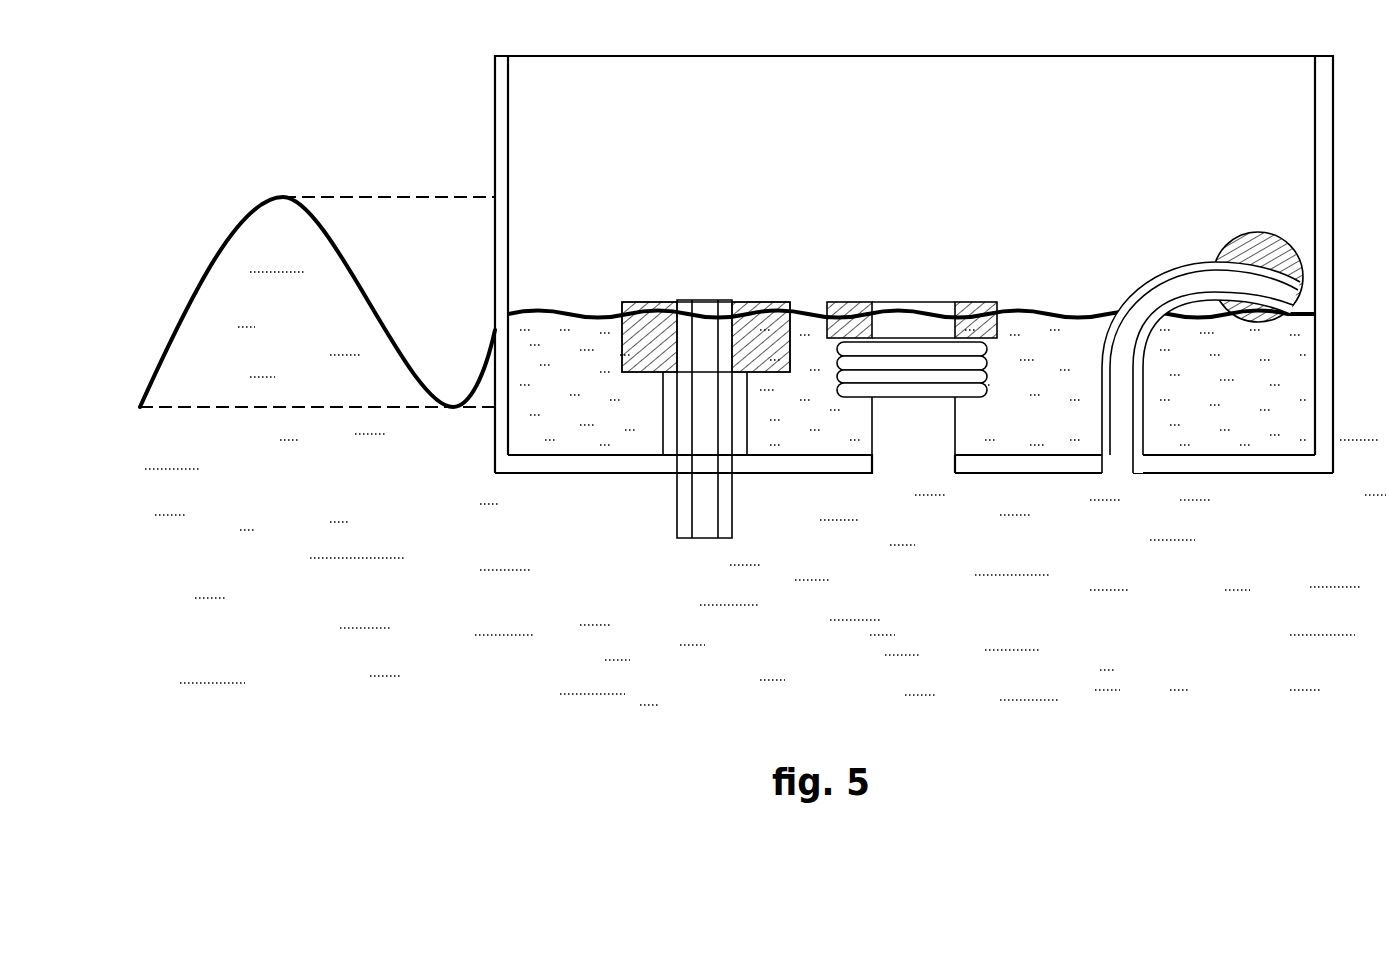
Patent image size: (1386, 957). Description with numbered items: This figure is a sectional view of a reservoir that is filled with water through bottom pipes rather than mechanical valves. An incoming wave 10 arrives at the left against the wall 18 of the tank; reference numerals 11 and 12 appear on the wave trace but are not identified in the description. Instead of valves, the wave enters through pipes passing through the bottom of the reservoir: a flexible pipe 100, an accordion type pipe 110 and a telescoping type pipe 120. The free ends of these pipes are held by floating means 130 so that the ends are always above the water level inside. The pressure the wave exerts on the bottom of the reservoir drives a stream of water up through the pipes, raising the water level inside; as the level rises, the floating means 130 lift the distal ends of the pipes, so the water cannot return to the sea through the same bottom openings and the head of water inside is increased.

The wall 18 is at (495, 108).
The incoming wave 10 is at (378, 304).
The wave crest level 11 is at (282, 195).
The wave trough level 12 is at (460, 410).
The floating means 130 is at (1237, 234).
The flexible pipe 100 is at (1155, 280).
The telescoping type pipe 120 is at (662, 413).
The accordion type pipe 110 is at (983, 397).